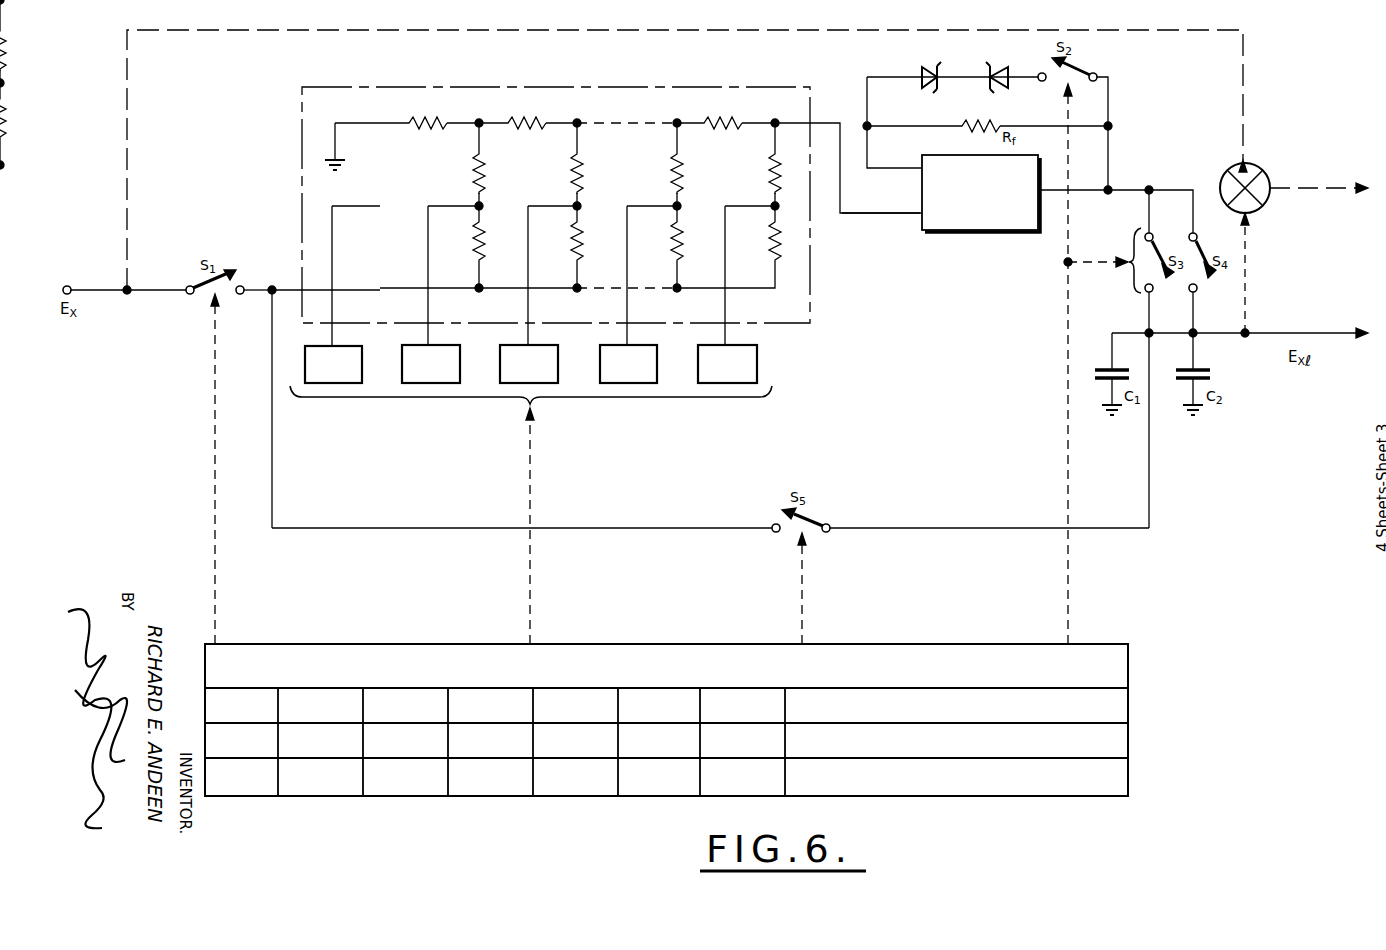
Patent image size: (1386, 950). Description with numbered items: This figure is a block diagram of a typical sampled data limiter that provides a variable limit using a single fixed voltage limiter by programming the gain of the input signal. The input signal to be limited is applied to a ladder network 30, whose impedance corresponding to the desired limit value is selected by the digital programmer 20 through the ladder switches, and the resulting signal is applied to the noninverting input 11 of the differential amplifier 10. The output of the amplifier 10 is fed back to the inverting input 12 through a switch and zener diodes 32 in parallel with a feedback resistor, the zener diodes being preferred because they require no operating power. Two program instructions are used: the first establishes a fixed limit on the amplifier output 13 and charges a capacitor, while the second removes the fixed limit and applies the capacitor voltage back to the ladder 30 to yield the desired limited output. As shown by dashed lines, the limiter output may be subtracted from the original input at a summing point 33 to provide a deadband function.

The differential amplifier 10 is at (978, 232).
The noninverting input 11 is at (876, 213).
The inverting input 12 is at (890, 168).
The amplifier output 13 is at (1098, 191).
The digital programmer 20 is at (658, 644).
The ladder network 30 is at (578, 87).
The zener diodes 32 is at (949, 72).
The summing point 33 is at (1262, 170).